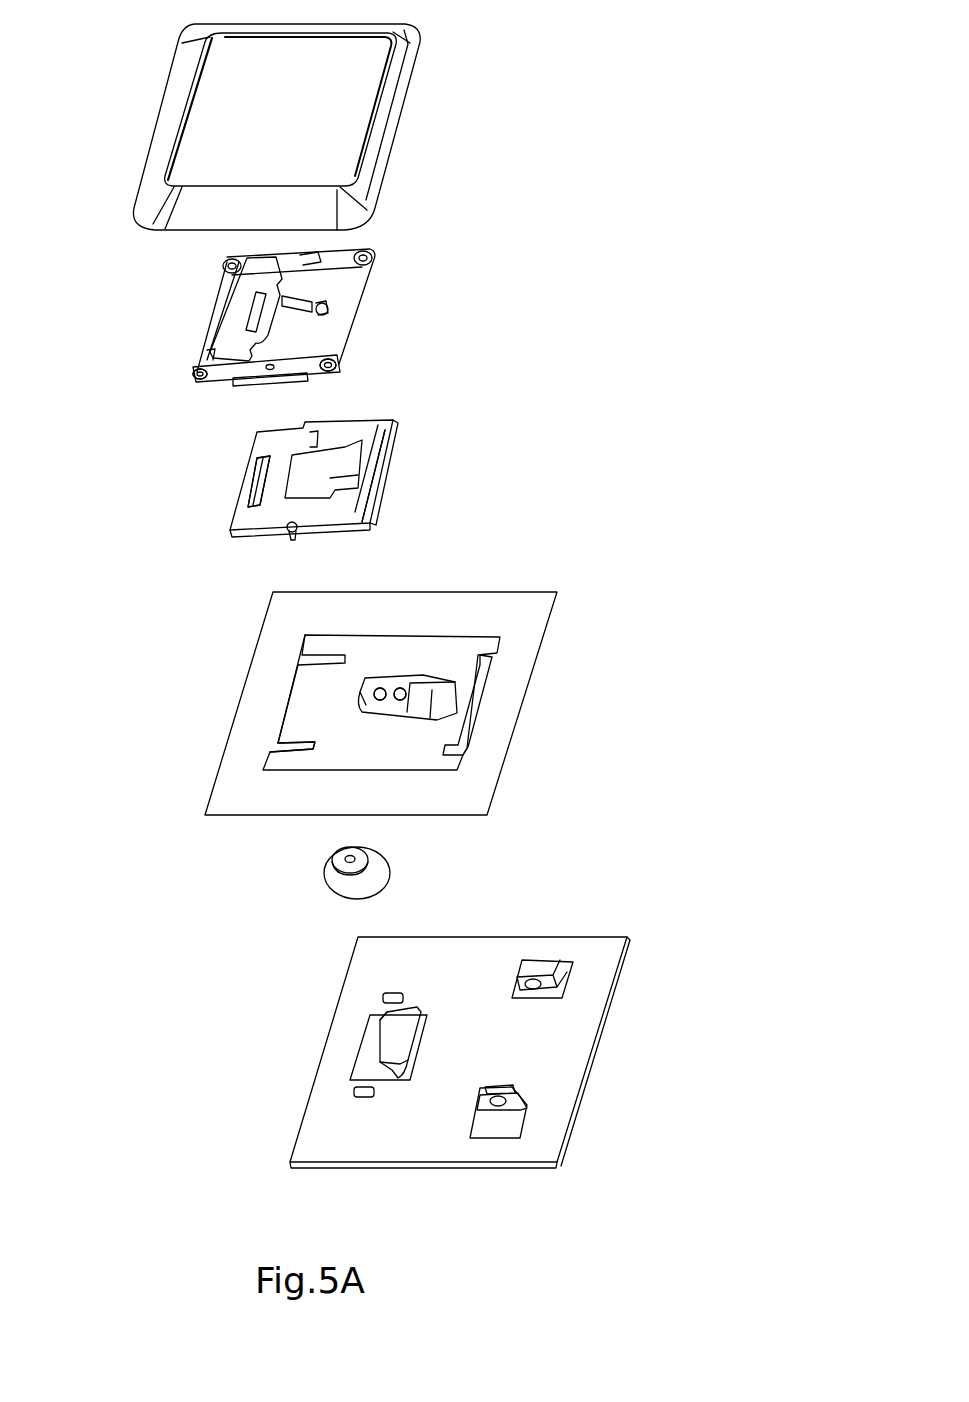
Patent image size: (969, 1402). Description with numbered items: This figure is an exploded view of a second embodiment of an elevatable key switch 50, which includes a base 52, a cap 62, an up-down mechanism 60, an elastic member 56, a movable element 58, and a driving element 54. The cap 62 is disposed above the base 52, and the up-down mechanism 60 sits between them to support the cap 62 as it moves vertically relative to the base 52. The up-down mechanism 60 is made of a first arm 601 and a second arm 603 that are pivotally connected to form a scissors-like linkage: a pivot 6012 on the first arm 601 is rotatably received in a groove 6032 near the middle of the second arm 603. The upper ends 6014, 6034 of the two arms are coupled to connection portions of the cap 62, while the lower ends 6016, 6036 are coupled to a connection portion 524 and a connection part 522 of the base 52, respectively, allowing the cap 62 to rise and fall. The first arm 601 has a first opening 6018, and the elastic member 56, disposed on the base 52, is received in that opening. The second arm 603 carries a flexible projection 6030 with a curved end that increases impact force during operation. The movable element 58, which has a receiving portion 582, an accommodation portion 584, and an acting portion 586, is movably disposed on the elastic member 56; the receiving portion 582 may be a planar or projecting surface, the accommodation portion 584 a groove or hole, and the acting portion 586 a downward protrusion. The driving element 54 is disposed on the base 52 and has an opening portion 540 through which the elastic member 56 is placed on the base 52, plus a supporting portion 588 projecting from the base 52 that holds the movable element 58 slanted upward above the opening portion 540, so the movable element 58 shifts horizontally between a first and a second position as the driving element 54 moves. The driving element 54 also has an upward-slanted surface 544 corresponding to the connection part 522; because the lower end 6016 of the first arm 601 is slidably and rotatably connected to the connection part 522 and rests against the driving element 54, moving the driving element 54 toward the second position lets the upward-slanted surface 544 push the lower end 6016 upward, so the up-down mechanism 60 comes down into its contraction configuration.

The elevatable key switch 50 is at (568, 232).
The base 52 is at (573, 1043).
The connection part 522 is at (393, 1042).
The connection portion 524 is at (547, 963).
The driving element 54 is at (527, 653).
The opening portion 540 is at (300, 700).
The upward-slanted surface 544 is at (308, 748).
The elastic member 56 is at (383, 883).
The movable element 58 is at (440, 693).
The receiving portion 582 is at (405, 688).
The accommodation portion 584 is at (437, 720).
The acting portion 586 is at (360, 710).
The supporting portion 588 is at (450, 672).
The up-down mechanism 60 is at (160, 445).
The first arm 601 is at (263, 447).
The pivot 6012 is at (291, 536).
The upper end 6014 is at (390, 440).
The lower end 6016 is at (237, 488).
The first opening 6018 is at (330, 478).
The second arm 603 is at (228, 318).
The flexible projection 6030 is at (333, 310).
The groove 6032 is at (320, 252).
The upper end 6034 is at (200, 376).
The lower end 6036 is at (333, 371).
The cap 62 is at (383, 140).